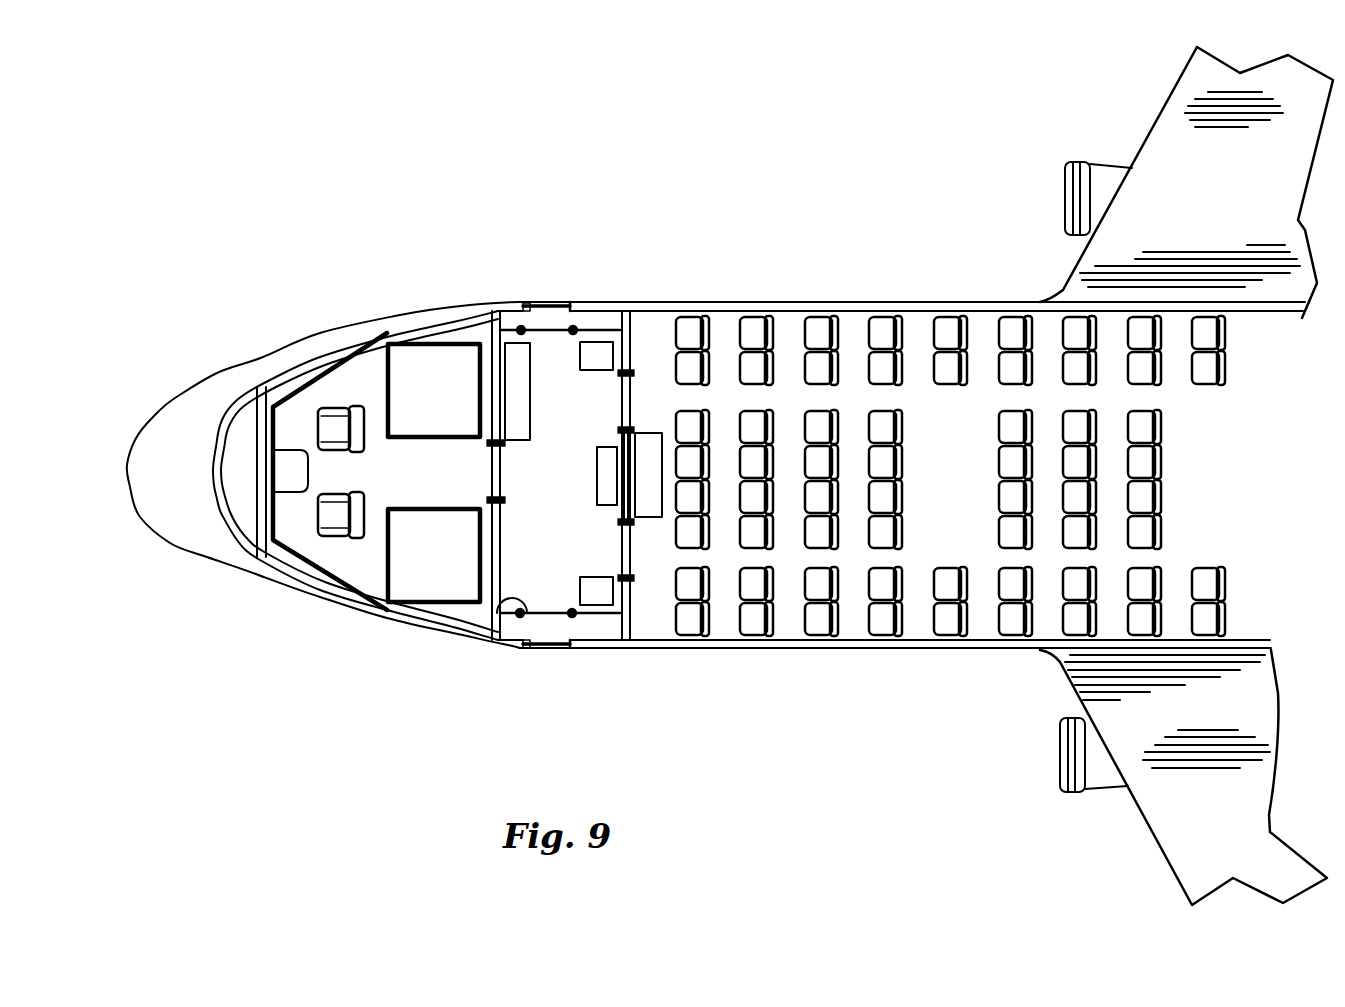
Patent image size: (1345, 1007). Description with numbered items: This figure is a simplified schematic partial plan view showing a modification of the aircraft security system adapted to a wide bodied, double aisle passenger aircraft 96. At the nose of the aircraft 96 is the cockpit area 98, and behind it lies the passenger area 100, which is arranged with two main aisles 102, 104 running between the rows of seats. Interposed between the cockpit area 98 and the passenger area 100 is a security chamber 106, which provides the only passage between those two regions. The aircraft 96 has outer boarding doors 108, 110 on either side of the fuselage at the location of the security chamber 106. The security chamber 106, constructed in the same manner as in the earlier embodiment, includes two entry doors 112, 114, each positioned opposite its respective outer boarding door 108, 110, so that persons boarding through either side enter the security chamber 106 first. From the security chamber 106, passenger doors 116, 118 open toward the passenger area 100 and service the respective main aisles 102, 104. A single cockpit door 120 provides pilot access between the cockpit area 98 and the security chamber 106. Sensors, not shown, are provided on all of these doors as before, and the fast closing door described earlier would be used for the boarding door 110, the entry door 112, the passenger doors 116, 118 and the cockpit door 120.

The wide bodied aircraft 96 is at (857, 728).
The cockpit area 98 is at (300, 508).
The passenger area 100 is at (728, 495).
The main aisle 102 is at (890, 553).
The main aisle 104 is at (842, 392).
The security chamber 106 is at (583, 473).
The outer boarding door 108 is at (538, 650).
The outer boarding door 110 is at (537, 325).
The entry door 112 is at (495, 602).
The entry door 114 is at (562, 300).
The passenger door 116 is at (630, 550).
The passenger door 118 is at (634, 385).
The cockpit door 120 is at (490, 462).